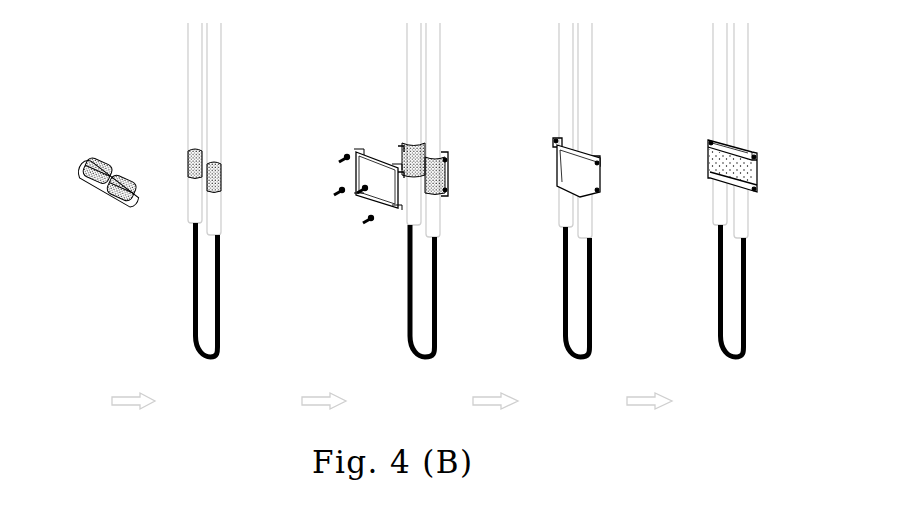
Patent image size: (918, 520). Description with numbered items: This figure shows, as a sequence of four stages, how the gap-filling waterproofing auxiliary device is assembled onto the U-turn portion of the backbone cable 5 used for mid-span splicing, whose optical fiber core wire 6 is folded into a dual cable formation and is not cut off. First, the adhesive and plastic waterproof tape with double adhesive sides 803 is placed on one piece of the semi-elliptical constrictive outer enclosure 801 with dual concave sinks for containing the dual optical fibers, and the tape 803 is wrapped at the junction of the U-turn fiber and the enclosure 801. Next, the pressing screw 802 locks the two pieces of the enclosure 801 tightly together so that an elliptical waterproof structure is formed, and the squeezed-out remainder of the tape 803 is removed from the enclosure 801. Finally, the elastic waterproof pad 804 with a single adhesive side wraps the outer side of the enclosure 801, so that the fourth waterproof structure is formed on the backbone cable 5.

The backbone cable 5 is at (188, 70).
The optical fiber core wire 6 is at (223, 288).
The semi-elliptical constrictive outer enclosure 801 is at (83, 198).
The pressing screw 802 is at (367, 224).
The waterproof tape with double adhesive sides 803 is at (90, 168).
The elastic waterproof pad 804 is at (755, 180).